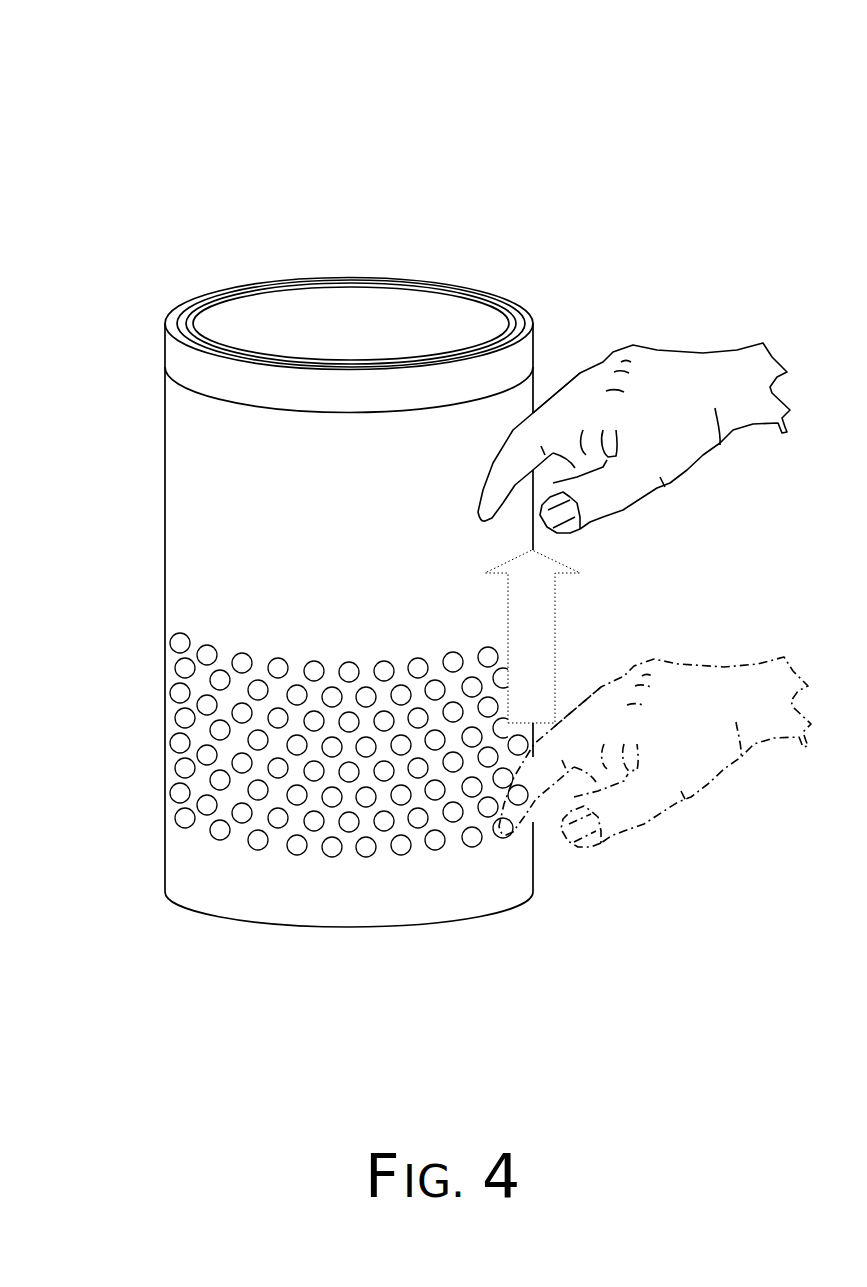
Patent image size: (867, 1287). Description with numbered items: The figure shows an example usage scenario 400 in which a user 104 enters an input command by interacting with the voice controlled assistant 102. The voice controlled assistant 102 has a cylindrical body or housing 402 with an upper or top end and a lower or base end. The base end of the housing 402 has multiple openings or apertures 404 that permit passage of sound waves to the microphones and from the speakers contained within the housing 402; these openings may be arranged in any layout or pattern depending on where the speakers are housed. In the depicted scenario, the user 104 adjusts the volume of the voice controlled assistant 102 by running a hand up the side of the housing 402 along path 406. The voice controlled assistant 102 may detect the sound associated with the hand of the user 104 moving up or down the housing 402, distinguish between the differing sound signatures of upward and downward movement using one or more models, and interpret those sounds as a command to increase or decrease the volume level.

The voice-controlled device usage scenario 400 is at (166, 51).
The voice controlled assistant 102 is at (200, 297).
The housing 402 is at (165, 483).
The apertures 404 is at (383, 672).
The path 406 is at (533, 655).
The user 104 is at (692, 440).